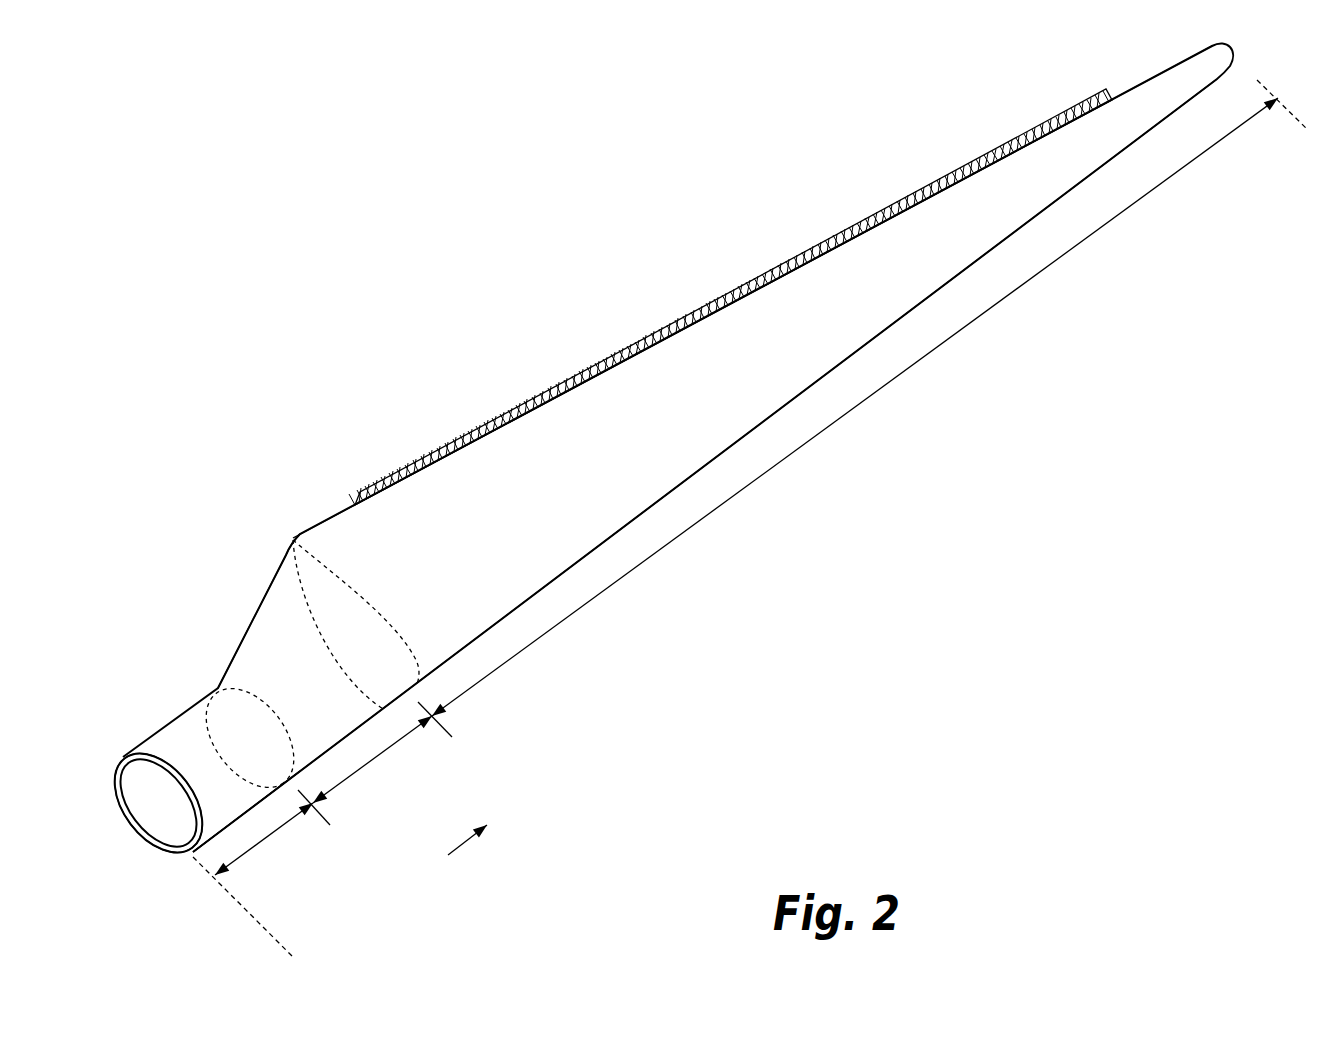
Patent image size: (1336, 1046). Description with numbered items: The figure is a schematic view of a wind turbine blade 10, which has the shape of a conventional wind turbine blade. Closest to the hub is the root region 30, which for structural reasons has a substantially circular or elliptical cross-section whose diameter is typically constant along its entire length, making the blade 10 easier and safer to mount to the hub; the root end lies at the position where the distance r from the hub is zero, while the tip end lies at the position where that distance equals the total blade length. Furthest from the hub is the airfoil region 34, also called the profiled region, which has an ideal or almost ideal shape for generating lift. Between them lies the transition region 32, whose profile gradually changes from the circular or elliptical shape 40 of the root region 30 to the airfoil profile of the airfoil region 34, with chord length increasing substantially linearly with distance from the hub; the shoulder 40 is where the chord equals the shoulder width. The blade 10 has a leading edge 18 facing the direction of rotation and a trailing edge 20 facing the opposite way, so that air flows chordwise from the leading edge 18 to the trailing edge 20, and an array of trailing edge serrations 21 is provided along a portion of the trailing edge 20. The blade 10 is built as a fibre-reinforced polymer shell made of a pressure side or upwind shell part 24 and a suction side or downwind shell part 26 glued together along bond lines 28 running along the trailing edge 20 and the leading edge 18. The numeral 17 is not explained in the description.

The wind turbine blade 10 is at (476, 298).
The root bore opening 17 is at (145, 788).
The leading edge 18 is at (893, 326).
The trailing edge 20 is at (737, 289).
The trailing edge serrations 21 is at (452, 440).
The pressure side or upwind shell part 24 is at (151, 750).
The suction side or downwind shell part 26 is at (163, 848).
The bond lines 28 is at (141, 746).
The root region 30 is at (275, 838).
The transition region 32 is at (377, 757).
The airfoil region 34 is at (773, 470).
The shoulder 40 is at (294, 540).